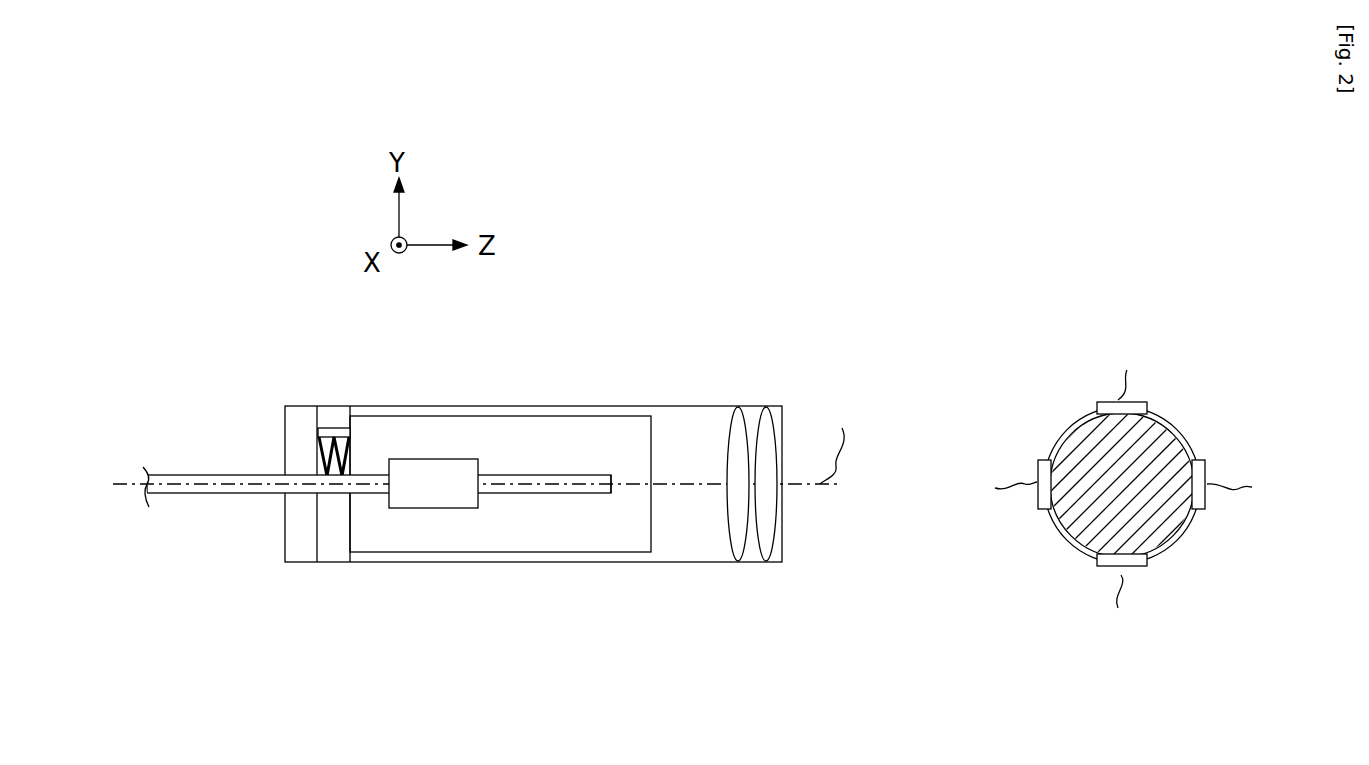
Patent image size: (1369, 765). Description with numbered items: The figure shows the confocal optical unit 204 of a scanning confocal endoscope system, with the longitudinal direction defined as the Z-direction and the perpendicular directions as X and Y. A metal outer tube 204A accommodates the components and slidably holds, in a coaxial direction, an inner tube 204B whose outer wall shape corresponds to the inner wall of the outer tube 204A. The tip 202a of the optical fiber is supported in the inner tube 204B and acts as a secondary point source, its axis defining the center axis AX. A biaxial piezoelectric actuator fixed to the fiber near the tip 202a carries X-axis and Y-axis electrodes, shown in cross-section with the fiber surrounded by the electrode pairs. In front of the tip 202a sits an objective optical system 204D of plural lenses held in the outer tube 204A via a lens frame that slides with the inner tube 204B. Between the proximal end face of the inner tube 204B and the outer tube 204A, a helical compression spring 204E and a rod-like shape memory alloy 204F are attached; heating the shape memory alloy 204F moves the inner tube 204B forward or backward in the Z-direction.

The tip of the optical fiber 202a is at (611, 493).
The confocal optical unit 204 is at (622, 266).
The outer tube 204A is at (680, 406).
The inner tube 204B is at (495, 416).
The objective optical system 204D is at (728, 528).
The helical compression spring 204E is at (333, 478).
The shape memory alloy 204F is at (336, 428).